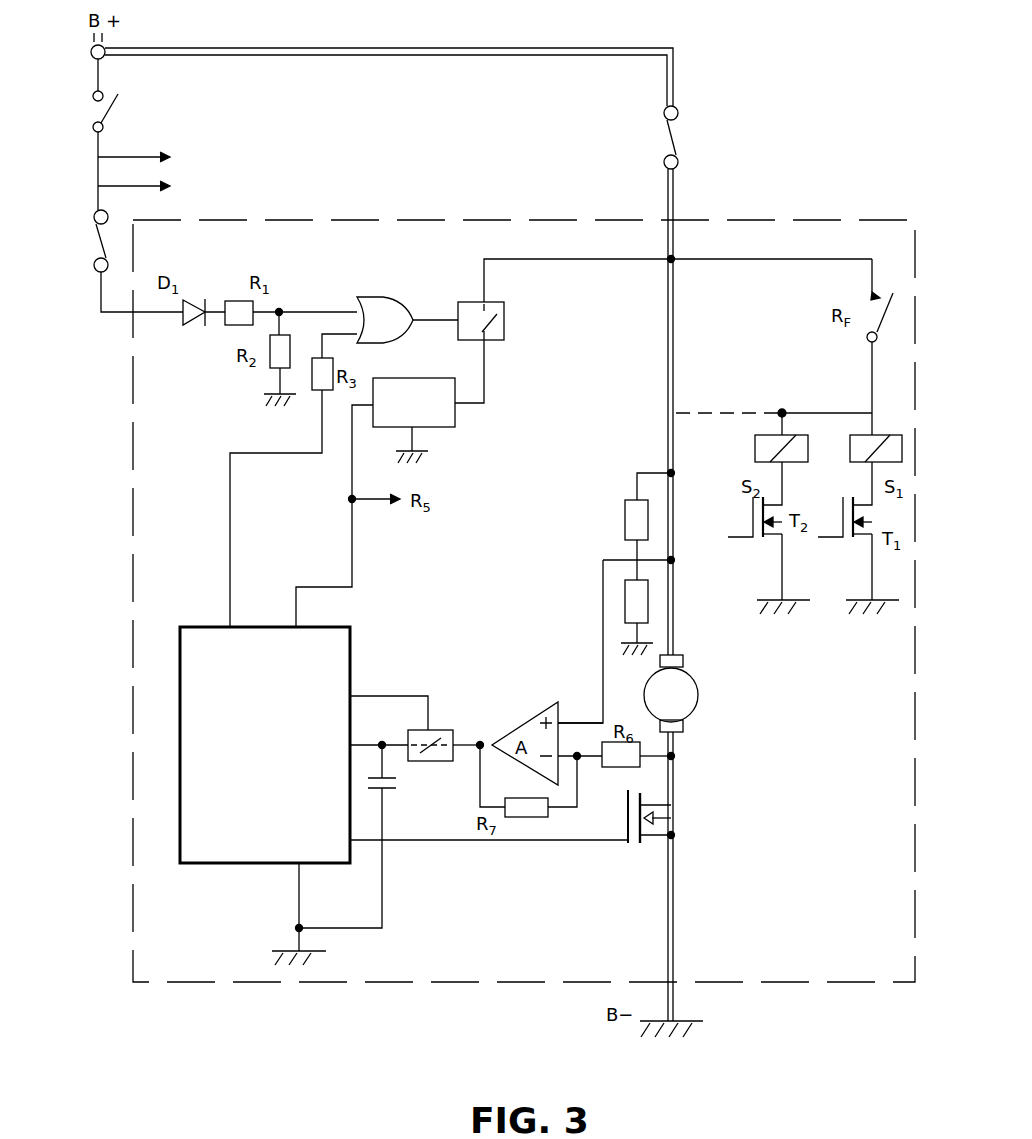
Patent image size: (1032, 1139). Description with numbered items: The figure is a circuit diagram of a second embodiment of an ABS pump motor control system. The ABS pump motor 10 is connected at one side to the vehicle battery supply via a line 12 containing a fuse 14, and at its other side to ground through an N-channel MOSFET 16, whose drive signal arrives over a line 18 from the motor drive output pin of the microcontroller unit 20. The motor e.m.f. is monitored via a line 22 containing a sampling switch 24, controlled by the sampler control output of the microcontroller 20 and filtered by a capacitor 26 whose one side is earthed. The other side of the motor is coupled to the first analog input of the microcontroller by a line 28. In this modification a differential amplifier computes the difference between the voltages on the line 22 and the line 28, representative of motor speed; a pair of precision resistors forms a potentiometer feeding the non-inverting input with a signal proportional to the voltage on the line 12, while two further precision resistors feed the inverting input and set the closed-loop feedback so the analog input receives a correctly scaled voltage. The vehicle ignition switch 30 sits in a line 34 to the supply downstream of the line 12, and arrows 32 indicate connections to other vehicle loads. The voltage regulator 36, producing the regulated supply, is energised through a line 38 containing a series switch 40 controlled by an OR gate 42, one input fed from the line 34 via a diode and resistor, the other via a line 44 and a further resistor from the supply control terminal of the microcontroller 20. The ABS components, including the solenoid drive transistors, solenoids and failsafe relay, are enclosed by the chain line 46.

The ABS pump motor 10 is at (697, 703).
The line 12 is at (675, 365).
The fuse 14 is at (676, 137).
The MOSFET 16 is at (686, 823).
The line 18 is at (566, 843).
The microcontroller unit 20 is at (246, 752).
The line 22 is at (656, 759).
The sampling switch 24 is at (438, 728).
The capacitor 26 is at (392, 784).
The line 28 is at (624, 553).
The vehicle ignition switch 30 is at (90, 113).
The arrows 32 is at (149, 179).
The line 34 is at (100, 145).
The voltage regulator 36 is at (445, 421).
The line 38 is at (484, 386).
The series switch 40 is at (497, 327).
The OR gate 42 is at (388, 310).
The line 44 is at (231, 522).
The chain line 46 is at (860, 985).